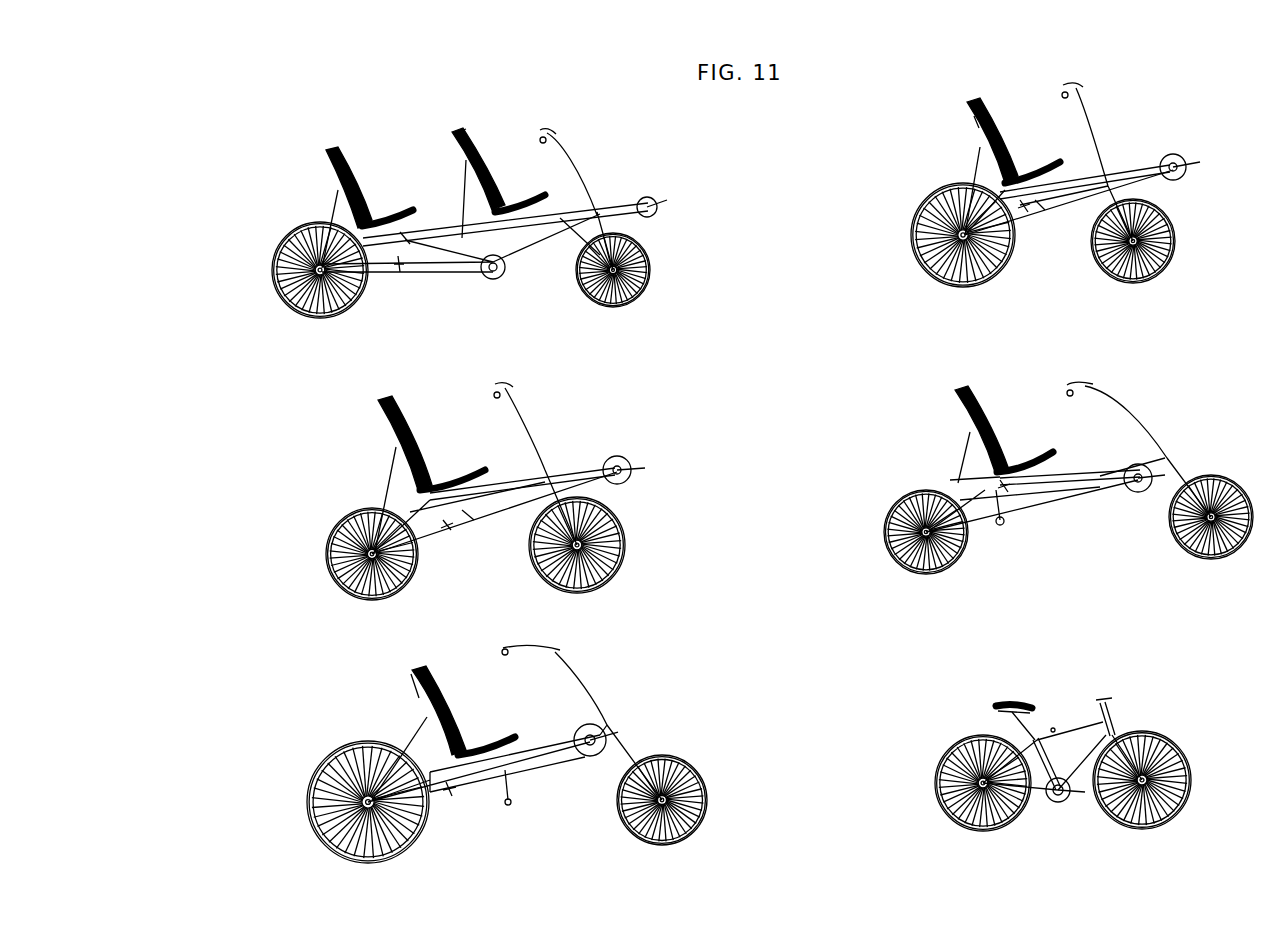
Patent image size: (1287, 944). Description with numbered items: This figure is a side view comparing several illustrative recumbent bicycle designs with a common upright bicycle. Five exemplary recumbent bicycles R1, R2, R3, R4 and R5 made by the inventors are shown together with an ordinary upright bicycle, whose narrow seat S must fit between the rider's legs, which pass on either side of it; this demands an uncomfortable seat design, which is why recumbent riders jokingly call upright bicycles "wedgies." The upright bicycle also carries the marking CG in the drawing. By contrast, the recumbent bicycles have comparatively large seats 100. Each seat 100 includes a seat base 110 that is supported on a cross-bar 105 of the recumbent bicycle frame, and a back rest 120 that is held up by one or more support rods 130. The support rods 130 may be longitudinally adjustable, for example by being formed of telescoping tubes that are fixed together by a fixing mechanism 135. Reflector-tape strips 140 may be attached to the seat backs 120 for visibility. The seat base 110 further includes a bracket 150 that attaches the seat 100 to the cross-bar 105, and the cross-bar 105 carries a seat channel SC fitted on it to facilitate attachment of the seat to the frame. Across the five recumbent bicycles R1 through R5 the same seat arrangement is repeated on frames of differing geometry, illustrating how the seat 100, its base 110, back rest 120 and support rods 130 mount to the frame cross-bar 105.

The seat 100 is at (344, 166).
The cross-bar 105 is at (455, 233).
The seat base 110 is at (407, 212).
The back rest 120 is at (337, 183).
The support rod 130 is at (333, 208).
The fixing mechanism 135 is at (466, 142).
The reflector-tape strips 140 is at (978, 132).
The bracket 150 is at (405, 236).
The seat channel SC is at (399, 258).
The recumbent bicycle R1 is at (333, 125).
The recumbent bicycle R2 is at (950, 86).
The recumbent bicycle R3 is at (347, 458).
The recumbent bicycle R4 is at (915, 392).
The recumbent bicycle R5 is at (337, 705).
The seat S is at (995, 703).
The center of gravity CG is at (1053, 727).